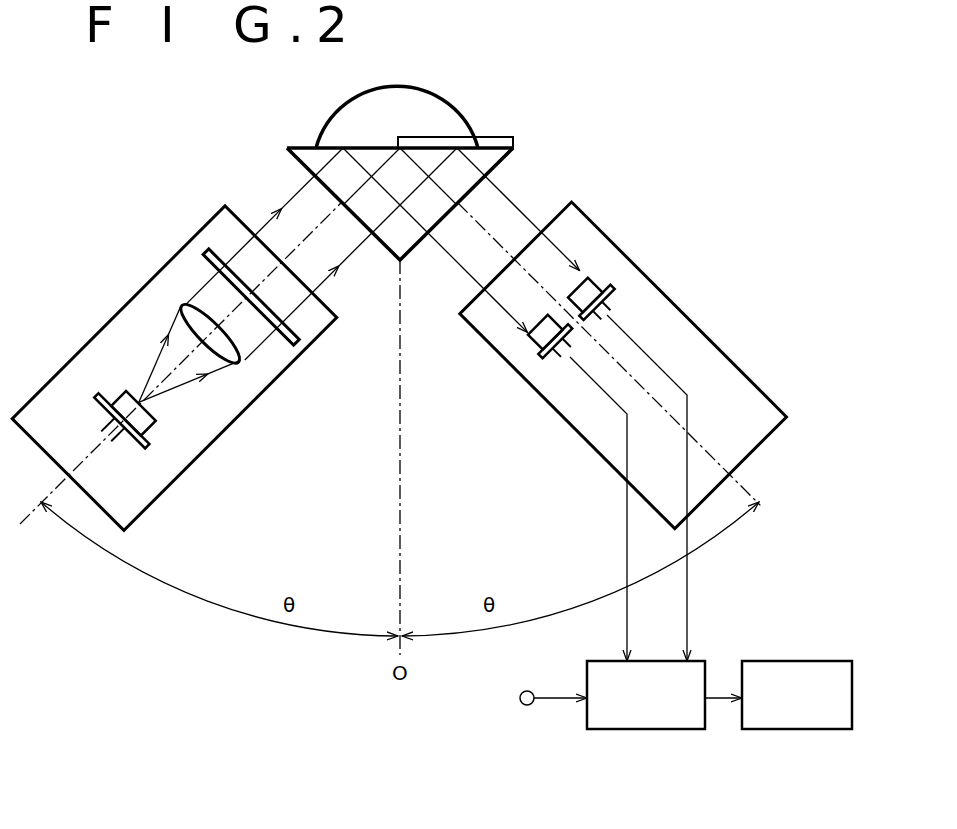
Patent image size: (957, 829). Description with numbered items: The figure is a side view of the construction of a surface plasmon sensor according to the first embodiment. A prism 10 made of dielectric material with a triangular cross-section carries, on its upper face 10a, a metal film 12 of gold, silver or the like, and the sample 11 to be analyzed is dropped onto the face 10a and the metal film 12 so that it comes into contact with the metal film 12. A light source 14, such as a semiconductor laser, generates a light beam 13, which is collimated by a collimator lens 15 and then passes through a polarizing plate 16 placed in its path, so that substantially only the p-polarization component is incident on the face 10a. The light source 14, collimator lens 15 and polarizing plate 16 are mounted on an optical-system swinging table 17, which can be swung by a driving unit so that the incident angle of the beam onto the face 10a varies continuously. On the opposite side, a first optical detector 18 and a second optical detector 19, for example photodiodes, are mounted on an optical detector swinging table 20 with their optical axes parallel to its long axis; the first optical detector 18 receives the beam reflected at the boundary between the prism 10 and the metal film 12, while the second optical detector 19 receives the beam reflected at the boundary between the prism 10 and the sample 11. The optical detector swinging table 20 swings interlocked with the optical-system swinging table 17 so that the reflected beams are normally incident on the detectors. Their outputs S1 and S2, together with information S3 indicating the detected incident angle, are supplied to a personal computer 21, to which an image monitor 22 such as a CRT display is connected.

The prism 10 is at (283, 167).
The upper face of the prism 10a is at (308, 147).
The sample 11 is at (428, 102).
The metal film 12 is at (500, 138).
The light beam 13 is at (200, 287).
The light source 14 is at (124, 398).
The collimator lens 15 is at (190, 310).
The polarizing plate 16 is at (212, 250).
The optical-system swinging table 17 is at (47, 387).
The first optical detector 18 is at (597, 278).
The second optical detector 19 is at (528, 338).
The optical detector swinging table 20 is at (688, 340).
The personal computer 21 is at (643, 730).
The image monitor 22 is at (800, 730).
The output of the first optical detector S1 is at (687, 630).
The output of the second optical detector S2 is at (627, 632).
The information indicating the detected incident angle S3 is at (534, 698).